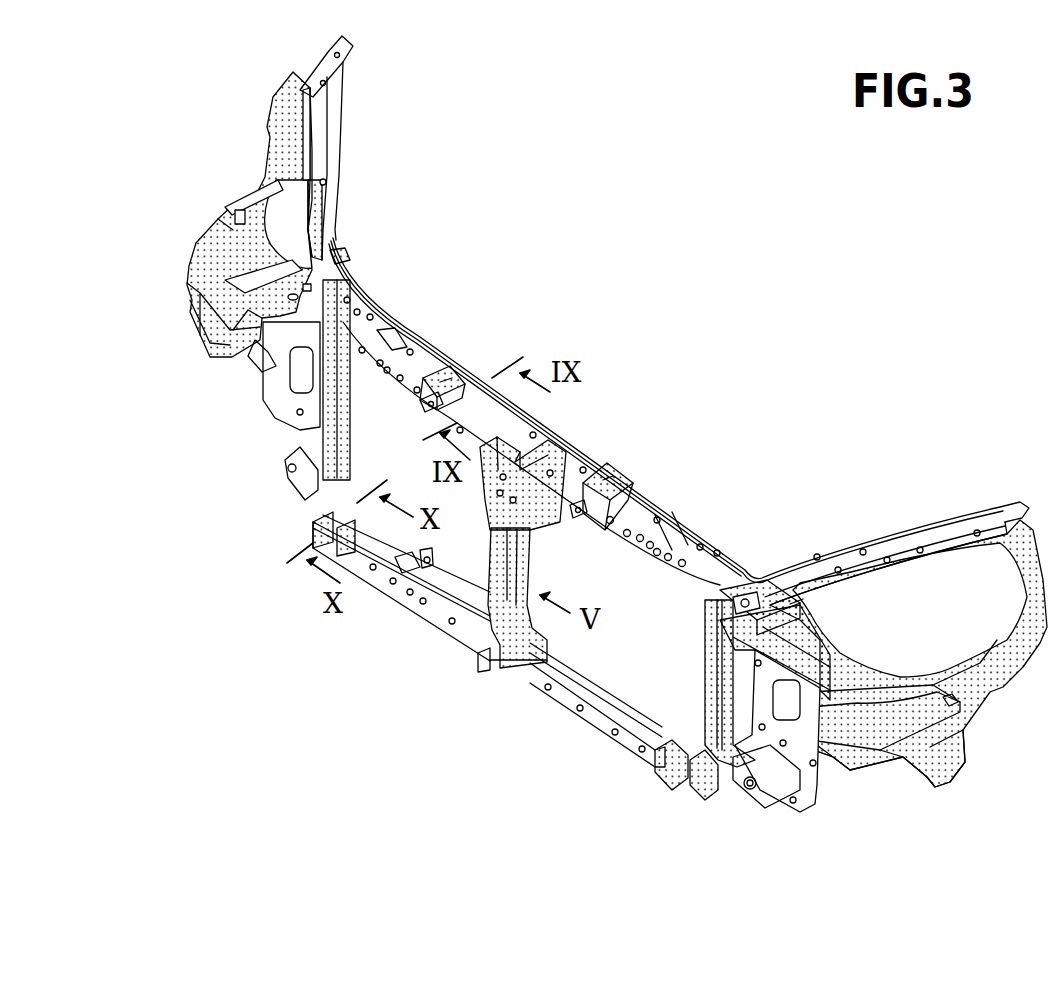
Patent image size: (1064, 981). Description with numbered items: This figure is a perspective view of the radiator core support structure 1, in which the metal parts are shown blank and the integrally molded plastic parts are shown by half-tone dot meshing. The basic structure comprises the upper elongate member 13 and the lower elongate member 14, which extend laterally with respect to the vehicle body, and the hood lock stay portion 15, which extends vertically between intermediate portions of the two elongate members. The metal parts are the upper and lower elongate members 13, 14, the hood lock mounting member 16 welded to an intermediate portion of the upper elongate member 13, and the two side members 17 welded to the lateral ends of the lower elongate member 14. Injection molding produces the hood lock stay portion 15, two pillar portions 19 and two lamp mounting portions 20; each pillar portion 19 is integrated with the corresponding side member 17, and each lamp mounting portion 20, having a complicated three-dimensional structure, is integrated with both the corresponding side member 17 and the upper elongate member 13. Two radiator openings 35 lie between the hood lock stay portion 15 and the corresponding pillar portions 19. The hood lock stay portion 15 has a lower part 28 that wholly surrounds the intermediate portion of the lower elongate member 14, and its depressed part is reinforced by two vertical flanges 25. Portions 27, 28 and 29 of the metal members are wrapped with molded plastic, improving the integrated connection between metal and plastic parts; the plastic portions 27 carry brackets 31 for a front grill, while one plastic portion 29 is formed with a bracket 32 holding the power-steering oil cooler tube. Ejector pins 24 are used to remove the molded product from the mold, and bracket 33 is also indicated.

The radiator core support structure 1 is at (690, 423).
The upper elongate member 13 is at (648, 508).
The lower elongate member 14 is at (593, 707).
The hood lock stay portion 15 is at (543, 627).
The hood lock mounting member 16 is at (523, 447).
The side member 17 is at (287, 394).
The pillar portion 19 is at (350, 430).
The lamp mounting portion 20 is at (250, 196).
The ejector pin 24 is at (305, 488).
The flange 25 is at (487, 623).
The plastic covering portion 27 is at (342, 253).
The lower part 28 is at (493, 663).
The plastic covering portion 29 is at (325, 517).
The bracket 31 is at (268, 357).
The bracket 32 is at (373, 565).
The bracket 33 is at (412, 595).
The radiator opening 35 is at (450, 563).